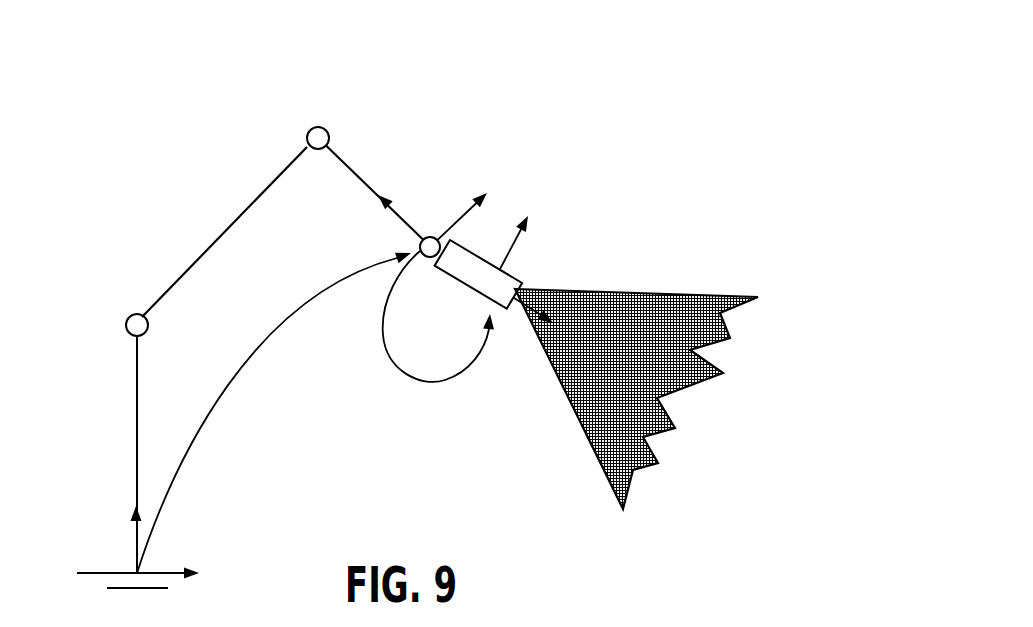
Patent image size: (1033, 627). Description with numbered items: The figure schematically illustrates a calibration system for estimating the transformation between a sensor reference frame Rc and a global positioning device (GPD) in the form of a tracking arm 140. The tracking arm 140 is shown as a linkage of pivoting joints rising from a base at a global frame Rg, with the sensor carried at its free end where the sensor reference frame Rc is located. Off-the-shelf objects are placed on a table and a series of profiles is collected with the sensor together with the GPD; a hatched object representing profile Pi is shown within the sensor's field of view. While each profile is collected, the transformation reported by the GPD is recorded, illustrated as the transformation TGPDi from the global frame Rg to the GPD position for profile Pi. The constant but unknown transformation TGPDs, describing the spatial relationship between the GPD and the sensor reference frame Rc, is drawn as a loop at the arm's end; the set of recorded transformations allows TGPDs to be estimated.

The tracking arm 140 is at (200, 205).
The sensor reference frame Rc is at (483, 253).
The global reference frame Rg is at (129, 547).
The transformation matrix provided by the GPD for profile Pi TGPDi is at (274, 413).
The transformation matrix describing the spatial relationship between the GPD and th TGPDs is at (435, 340).
The profile Pi is at (643, 453).